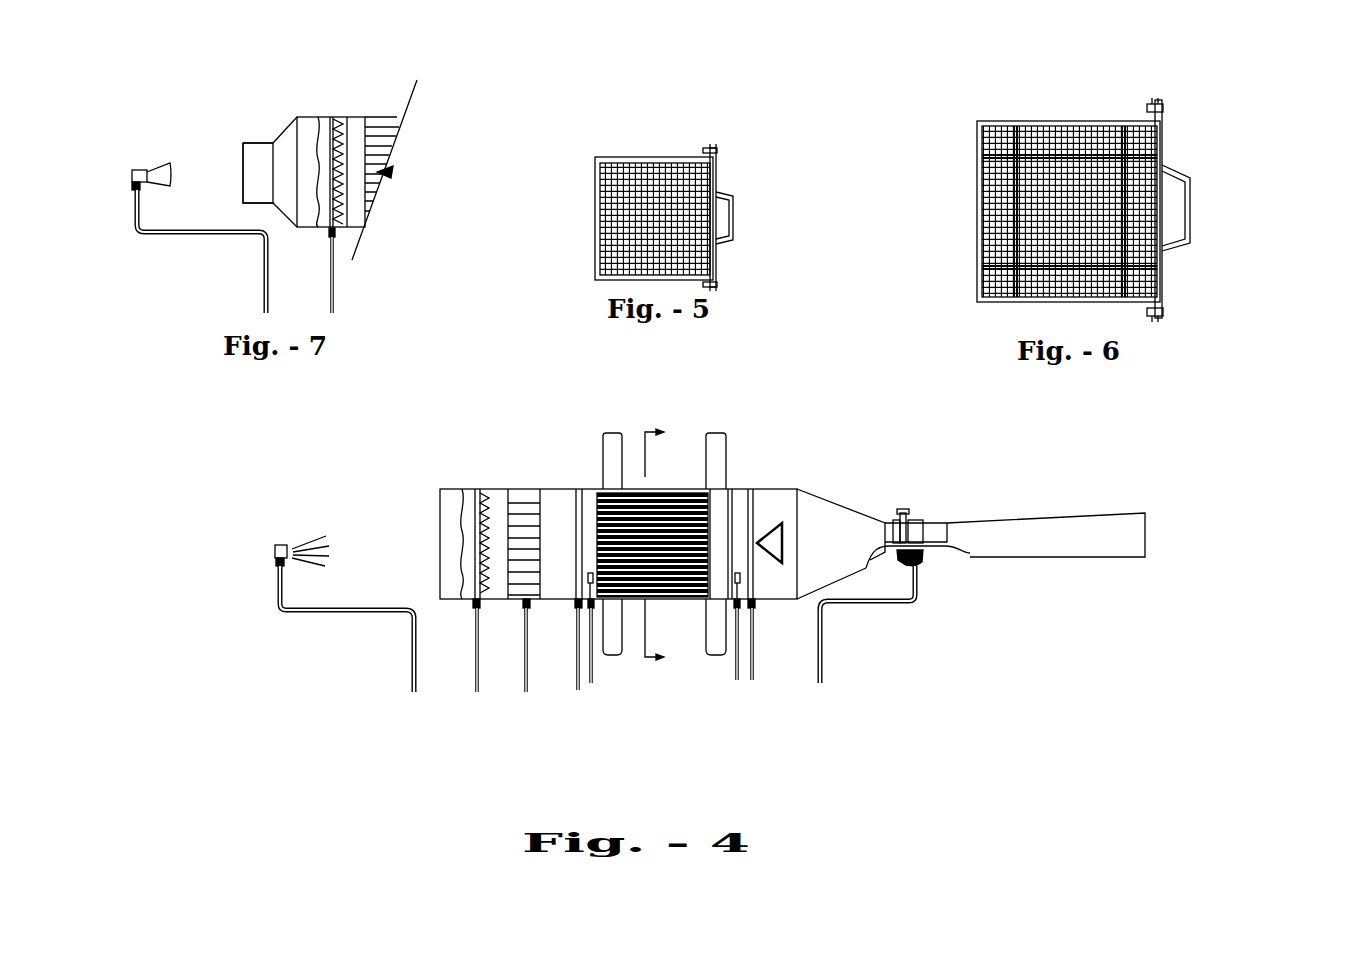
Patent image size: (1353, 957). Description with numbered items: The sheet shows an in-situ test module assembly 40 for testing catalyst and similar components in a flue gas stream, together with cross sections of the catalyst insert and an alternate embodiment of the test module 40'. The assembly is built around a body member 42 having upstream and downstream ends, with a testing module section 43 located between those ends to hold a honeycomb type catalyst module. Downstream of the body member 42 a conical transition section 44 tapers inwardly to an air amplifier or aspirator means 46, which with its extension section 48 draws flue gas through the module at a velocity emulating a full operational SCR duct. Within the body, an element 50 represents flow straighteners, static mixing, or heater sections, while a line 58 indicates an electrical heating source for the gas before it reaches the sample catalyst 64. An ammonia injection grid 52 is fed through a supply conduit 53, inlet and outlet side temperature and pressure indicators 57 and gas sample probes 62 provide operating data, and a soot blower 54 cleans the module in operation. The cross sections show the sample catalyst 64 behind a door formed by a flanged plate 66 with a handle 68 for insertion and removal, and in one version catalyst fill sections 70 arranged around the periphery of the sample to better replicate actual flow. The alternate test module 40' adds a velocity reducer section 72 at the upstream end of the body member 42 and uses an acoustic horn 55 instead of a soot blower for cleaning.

In FIG. 4, the test module assembly 40 is at (658, 536).
In FIG. 7, the test module 40' is at (304, 142).
In FIG. 7, the body member 42 is at (356, 116).
In FIG. 5, the body member 42 is at (597, 243).
In FIG. 6, the body member 42 is at (978, 262).
In FIG. 4, the body member 42 is at (558, 489).
In FIG. 4, the testing module section 43 is at (637, 500).
In FIG. 4, the conical transition section 44 is at (838, 530).
In FIG. 4, the air amplifier or aspirator means 46 is at (917, 522).
In FIG. 4, the amplifier extension section 48 is at (1067, 545).
In FIG. 7, the flow straightener, static mixing, and/or heater section 50 is at (380, 118).
In FIG. 4, the flow straightener, static mixing, and/or heater section 50 is at (512, 503).
In FIG. 7, the ammonia injection grid 52 is at (330, 218).
In FIG. 4, the ammonia injection grid 52 is at (478, 500).
In FIG. 4, the supply conduit 53 is at (477, 673).
In FIG. 4, the soot blower 54 is at (282, 545).
In FIG. 7, the acoustic horn 55 is at (170, 165).
In FIG. 4, the inlet and outlet side temperature and pressure indicators 57 is at (737, 680).
In FIG. 7, the electrical heating source line 58 is at (265, 262).
In FIG. 4, the electrical heating source line 58 is at (525, 678).
In FIG. 4, the gas sample probes 62 is at (718, 505).
In FIG. 5, the sample catalyst 64 is at (670, 178).
In FIG. 6, the sample catalyst 64 is at (1034, 175).
In FIG. 5, the flanged plate 66 is at (716, 178).
In FIG. 6, the flanged plate 66 is at (1160, 120).
In FIG. 5, the handle 68 is at (735, 210).
In FIG. 6, the handle 68 is at (1190, 203).
In FIG. 6, the catalyst fill sections 70 is at (1098, 146).
In FIG. 7, the velocity reducer section 72 is at (285, 143).